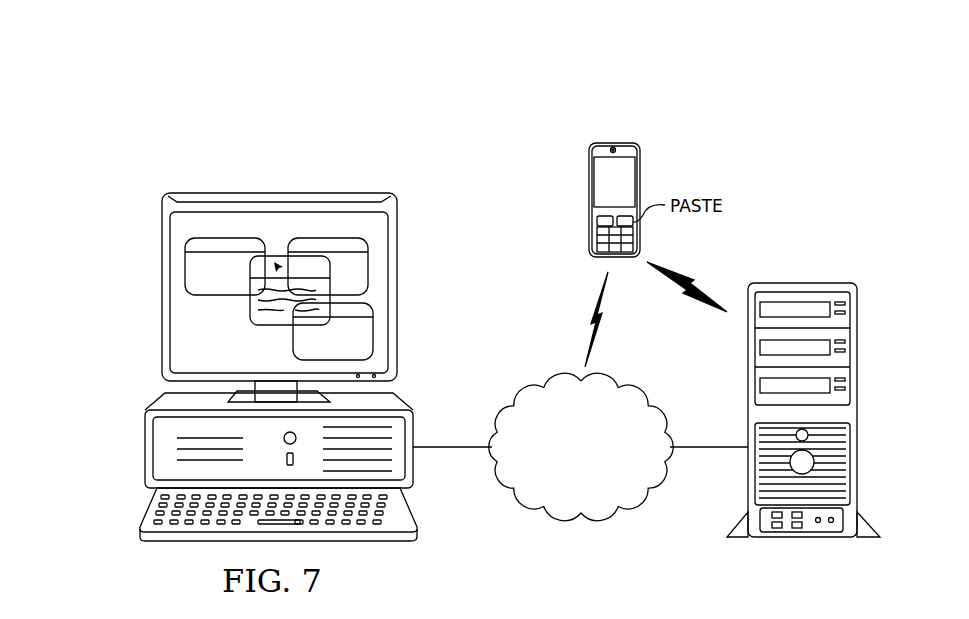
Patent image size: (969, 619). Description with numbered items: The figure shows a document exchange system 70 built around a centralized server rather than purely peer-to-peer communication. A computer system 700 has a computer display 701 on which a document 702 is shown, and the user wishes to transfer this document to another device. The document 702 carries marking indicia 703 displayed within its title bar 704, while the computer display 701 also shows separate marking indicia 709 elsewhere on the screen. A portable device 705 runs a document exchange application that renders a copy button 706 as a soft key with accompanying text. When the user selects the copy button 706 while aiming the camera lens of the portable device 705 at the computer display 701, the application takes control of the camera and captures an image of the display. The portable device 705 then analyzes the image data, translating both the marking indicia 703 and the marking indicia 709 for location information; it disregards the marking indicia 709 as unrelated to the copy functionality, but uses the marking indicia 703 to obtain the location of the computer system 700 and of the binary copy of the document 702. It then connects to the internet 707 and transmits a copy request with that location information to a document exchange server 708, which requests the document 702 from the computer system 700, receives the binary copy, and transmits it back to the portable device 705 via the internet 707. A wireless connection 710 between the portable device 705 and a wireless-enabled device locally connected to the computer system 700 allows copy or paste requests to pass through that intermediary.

The document exchange system 70 is at (343, 107).
The computer system 700 is at (111, 394).
The computer display 701 is at (156, 236).
The document 702 is at (251, 304).
The marking indicia 703 is at (322, 269).
The title bar 704 is at (276, 270).
The portable device 705 is at (623, 140).
The copy button 706 is at (597, 222).
The internet 707 is at (602, 517).
The document exchange server 708 is at (810, 538).
The marking indicia 709 is at (196, 222).
The connection 710 is at (728, 278).